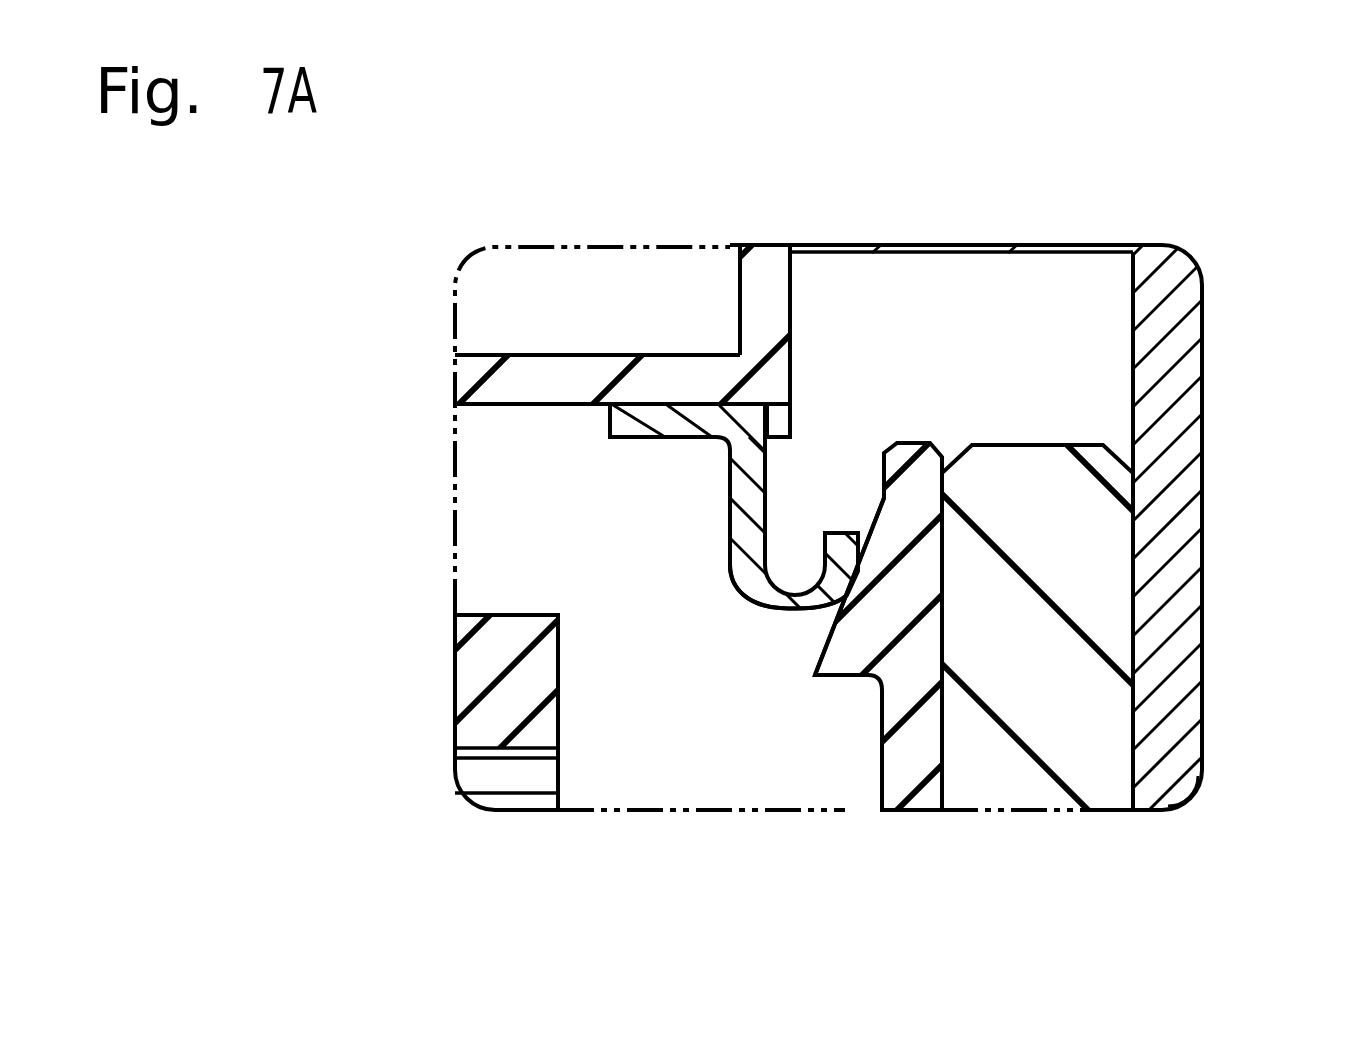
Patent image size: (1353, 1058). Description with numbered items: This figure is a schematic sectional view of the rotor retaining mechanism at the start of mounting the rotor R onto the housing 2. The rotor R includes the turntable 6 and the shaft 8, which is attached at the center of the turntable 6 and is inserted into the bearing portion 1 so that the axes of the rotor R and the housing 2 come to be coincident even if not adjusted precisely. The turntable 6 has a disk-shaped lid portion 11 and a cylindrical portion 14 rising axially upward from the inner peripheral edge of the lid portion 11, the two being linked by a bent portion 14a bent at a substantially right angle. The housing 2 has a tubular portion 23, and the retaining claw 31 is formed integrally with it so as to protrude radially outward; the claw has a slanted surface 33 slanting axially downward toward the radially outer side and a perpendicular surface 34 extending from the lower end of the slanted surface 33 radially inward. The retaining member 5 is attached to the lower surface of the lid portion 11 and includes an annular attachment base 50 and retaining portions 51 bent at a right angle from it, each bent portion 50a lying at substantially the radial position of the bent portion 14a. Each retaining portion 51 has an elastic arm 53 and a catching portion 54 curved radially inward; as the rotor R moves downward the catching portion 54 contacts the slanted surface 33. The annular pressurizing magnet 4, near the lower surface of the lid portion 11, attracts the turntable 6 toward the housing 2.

The bearing portion 1 is at (1022, 770).
The housing 2 is at (1232, 752).
The pressurizing magnet 4 is at (470, 678).
The retaining member 5 is at (600, 567).
The turntable 6 is at (945, 242).
The shaft 8 is at (1186, 356).
The lid portion 11 is at (493, 406).
The cylindrical portion 14 is at (738, 308).
The bent portion 14a is at (773, 403).
The tubular portion 23 is at (912, 767).
The retaining claw 31 is at (912, 427).
The slanted surface 33 is at (812, 655).
The perpendicular surface 34 is at (832, 680).
The attachment base 50 is at (610, 420).
The bent portion 50a is at (764, 425).
The retaining portion 51 is at (735, 612).
The arm 53 is at (730, 497).
The catching portion 54 is at (736, 598).
The rotor R is at (556, 340).